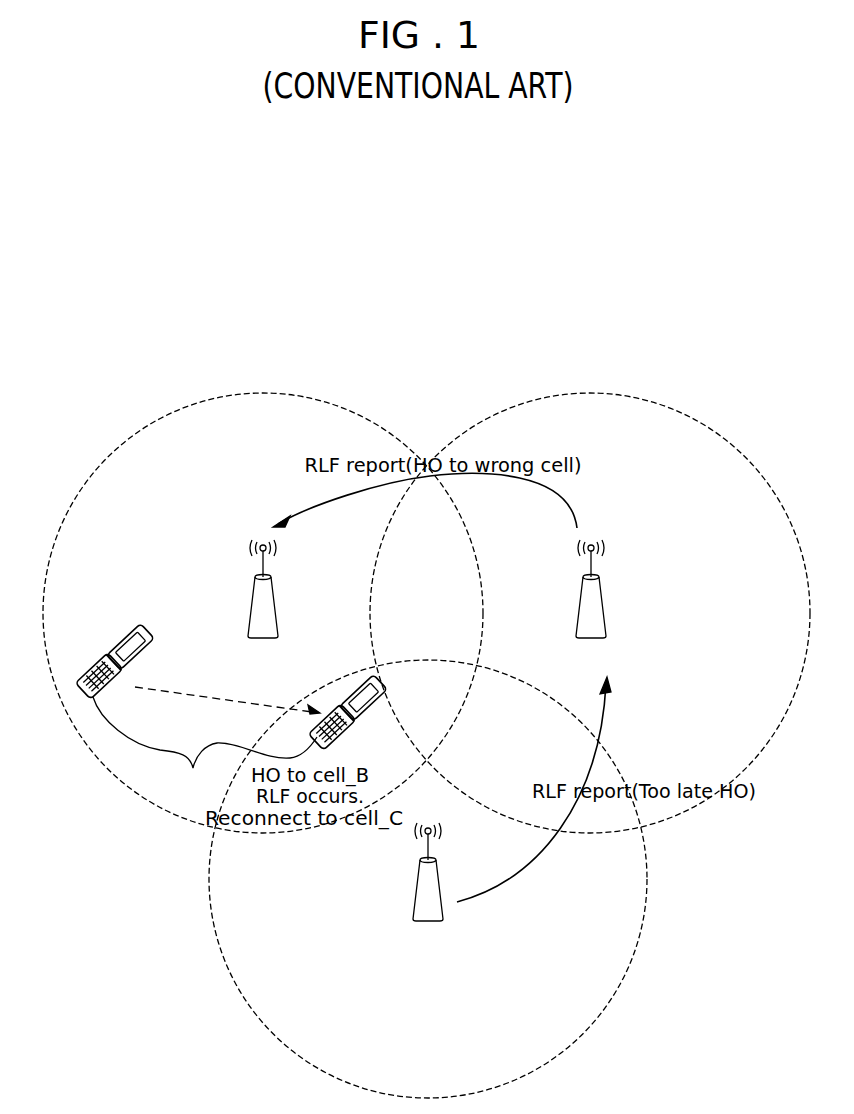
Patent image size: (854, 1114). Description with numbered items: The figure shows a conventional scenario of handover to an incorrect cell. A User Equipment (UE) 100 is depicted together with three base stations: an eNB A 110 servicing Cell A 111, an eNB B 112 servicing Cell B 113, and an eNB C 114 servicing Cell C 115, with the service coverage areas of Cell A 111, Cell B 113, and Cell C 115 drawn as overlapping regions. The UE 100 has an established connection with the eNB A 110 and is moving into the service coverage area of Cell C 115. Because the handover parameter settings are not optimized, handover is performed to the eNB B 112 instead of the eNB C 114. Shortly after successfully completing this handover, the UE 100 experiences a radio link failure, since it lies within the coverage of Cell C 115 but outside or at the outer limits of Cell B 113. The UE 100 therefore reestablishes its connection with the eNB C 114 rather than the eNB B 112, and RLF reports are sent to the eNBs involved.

The User Equipment (UE) 100 is at (231, 708).
The eNB A 110 is at (257, 607).
The Cell A 111 is at (235, 430).
The eNB B 112 is at (598, 607).
The Cell B 113 is at (617, 428).
The eNB C 114 is at (417, 895).
The Cell C 115 is at (433, 1064).